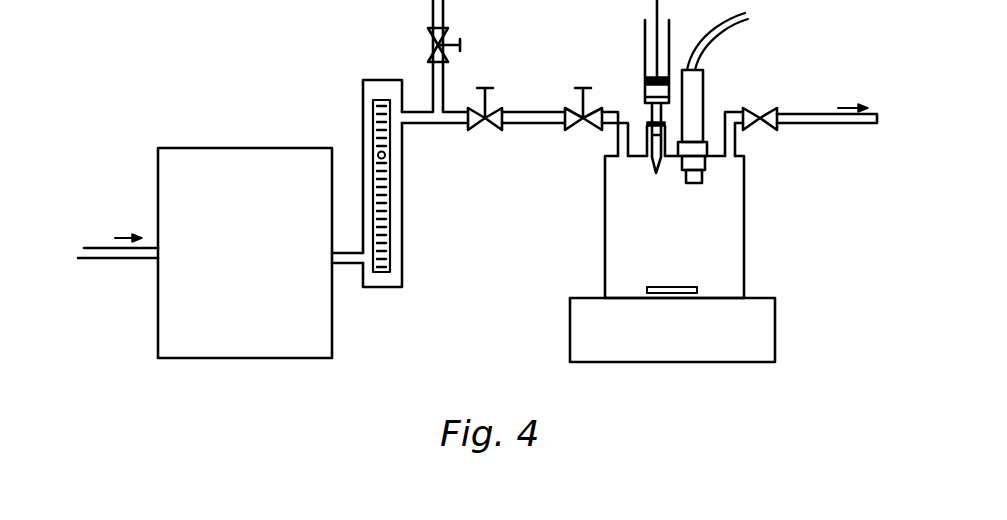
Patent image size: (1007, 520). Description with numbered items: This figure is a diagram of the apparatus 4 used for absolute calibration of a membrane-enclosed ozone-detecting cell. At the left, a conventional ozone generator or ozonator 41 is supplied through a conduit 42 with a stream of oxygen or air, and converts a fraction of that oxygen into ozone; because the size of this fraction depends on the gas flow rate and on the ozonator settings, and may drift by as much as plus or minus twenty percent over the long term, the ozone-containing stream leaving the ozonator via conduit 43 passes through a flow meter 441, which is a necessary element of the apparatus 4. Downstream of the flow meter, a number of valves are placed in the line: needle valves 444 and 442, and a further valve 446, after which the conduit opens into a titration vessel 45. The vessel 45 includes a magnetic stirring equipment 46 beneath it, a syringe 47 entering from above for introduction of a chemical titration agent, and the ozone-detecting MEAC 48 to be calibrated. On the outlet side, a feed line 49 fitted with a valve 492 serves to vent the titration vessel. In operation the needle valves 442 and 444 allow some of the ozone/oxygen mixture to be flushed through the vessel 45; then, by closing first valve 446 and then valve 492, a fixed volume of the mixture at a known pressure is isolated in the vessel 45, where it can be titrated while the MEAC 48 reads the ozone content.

The apparatus 4 is at (486, 300).
The ozone generator 41 is at (256, 265).
The conduit 42 is at (122, 258).
The conduit 43 is at (356, 263).
The flow meter 441 is at (396, 227).
The needle valve 442 is at (494, 126).
The needle valve 444 is at (450, 50).
The valve 446 is at (608, 70).
The titration vessel 45 is at (682, 247).
The magnetic stirring equipment 46 is at (682, 345).
The syringe 47 is at (645, 45).
The ozone detecting MEAC 48 is at (700, 106).
The feed line 49 is at (793, 117).
The valve 492 is at (781, 129).